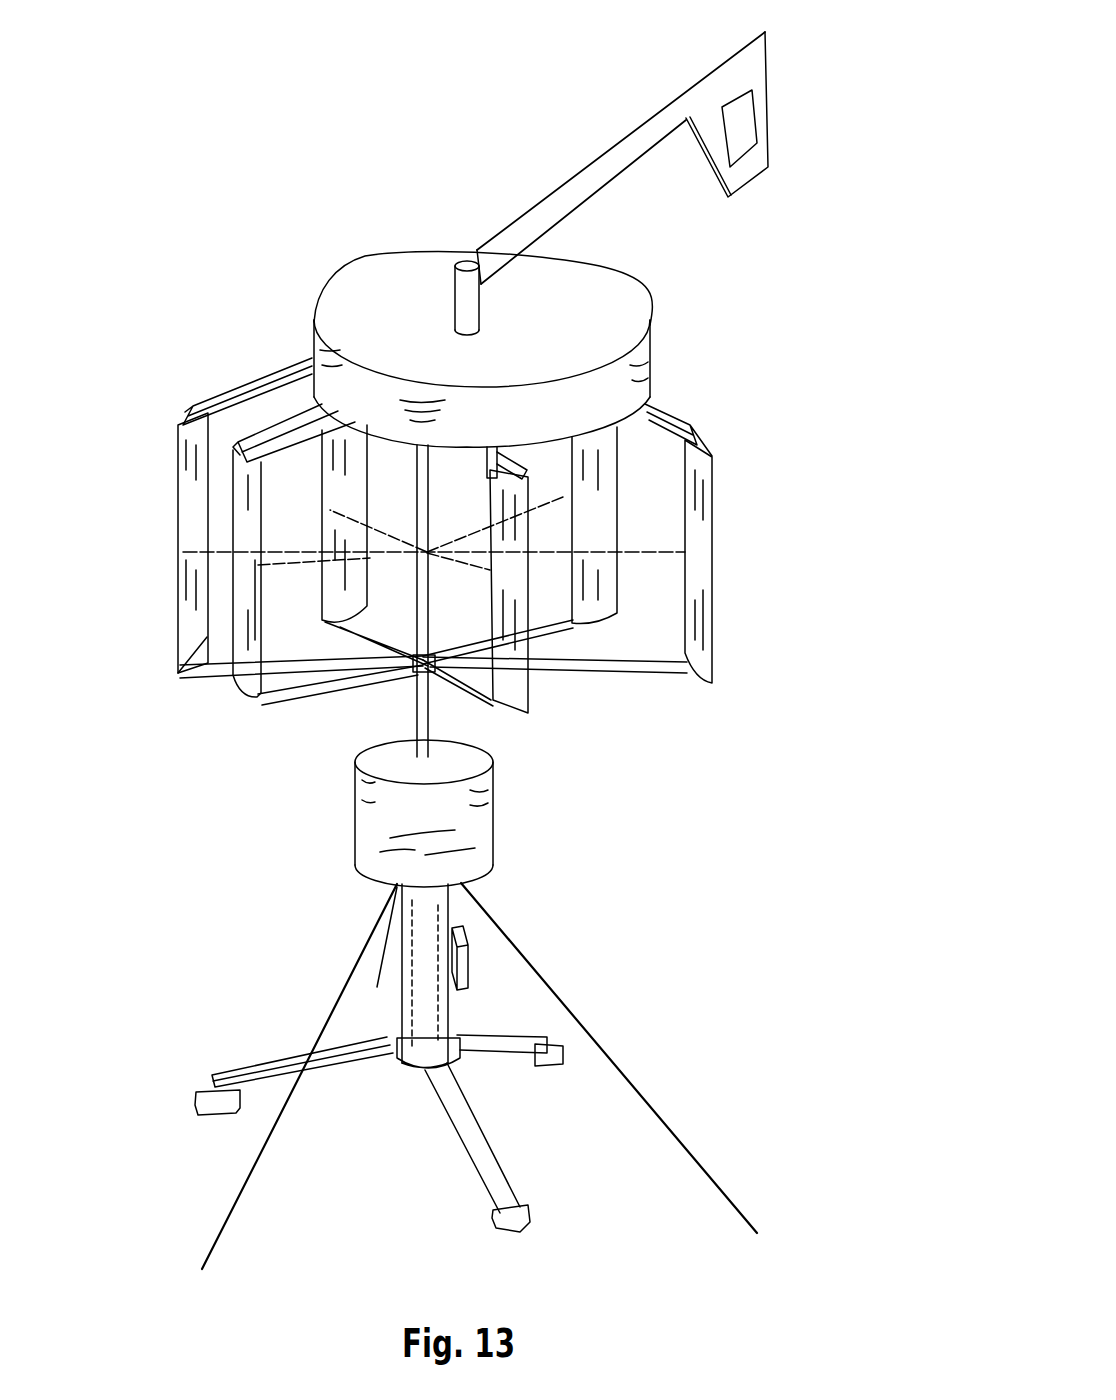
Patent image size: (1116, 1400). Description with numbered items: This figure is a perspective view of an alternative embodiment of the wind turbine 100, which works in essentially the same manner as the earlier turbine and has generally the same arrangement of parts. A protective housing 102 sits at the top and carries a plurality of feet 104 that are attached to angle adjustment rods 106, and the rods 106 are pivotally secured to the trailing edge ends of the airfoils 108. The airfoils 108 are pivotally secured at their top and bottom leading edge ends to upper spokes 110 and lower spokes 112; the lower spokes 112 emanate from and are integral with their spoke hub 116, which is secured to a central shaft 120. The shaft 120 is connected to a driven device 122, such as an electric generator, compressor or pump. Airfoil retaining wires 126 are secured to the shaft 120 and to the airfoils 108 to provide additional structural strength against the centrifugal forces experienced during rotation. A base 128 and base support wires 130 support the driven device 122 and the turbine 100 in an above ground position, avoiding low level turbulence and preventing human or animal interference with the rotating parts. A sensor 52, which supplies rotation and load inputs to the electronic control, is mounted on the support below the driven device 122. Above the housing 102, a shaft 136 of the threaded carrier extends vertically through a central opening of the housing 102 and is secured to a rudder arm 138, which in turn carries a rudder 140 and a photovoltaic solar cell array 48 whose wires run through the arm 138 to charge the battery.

The wind turbine 100 is at (317, 142).
The protective housing 102 is at (652, 314).
The feet 104 is at (330, 395).
The angle adjustment rods 106 is at (263, 423).
The airfoils 108 is at (178, 510).
The upper spokes 110 is at (293, 447).
The lower spokes 112 is at (320, 693).
The spoke hub 116 is at (413, 673).
The central shaft 120 is at (427, 593).
The driven device 122 is at (424, 813).
The airfoil retaining wires 126 is at (387, 533).
The base 128 is at (410, 1068).
The base support wires 130 is at (352, 975).
The shaft 136 is at (474, 307).
The rudder arm 138 is at (568, 180).
The rudder 140 is at (762, 62).
The solar cells 48 is at (750, 127).
The sensor 52 is at (463, 972).